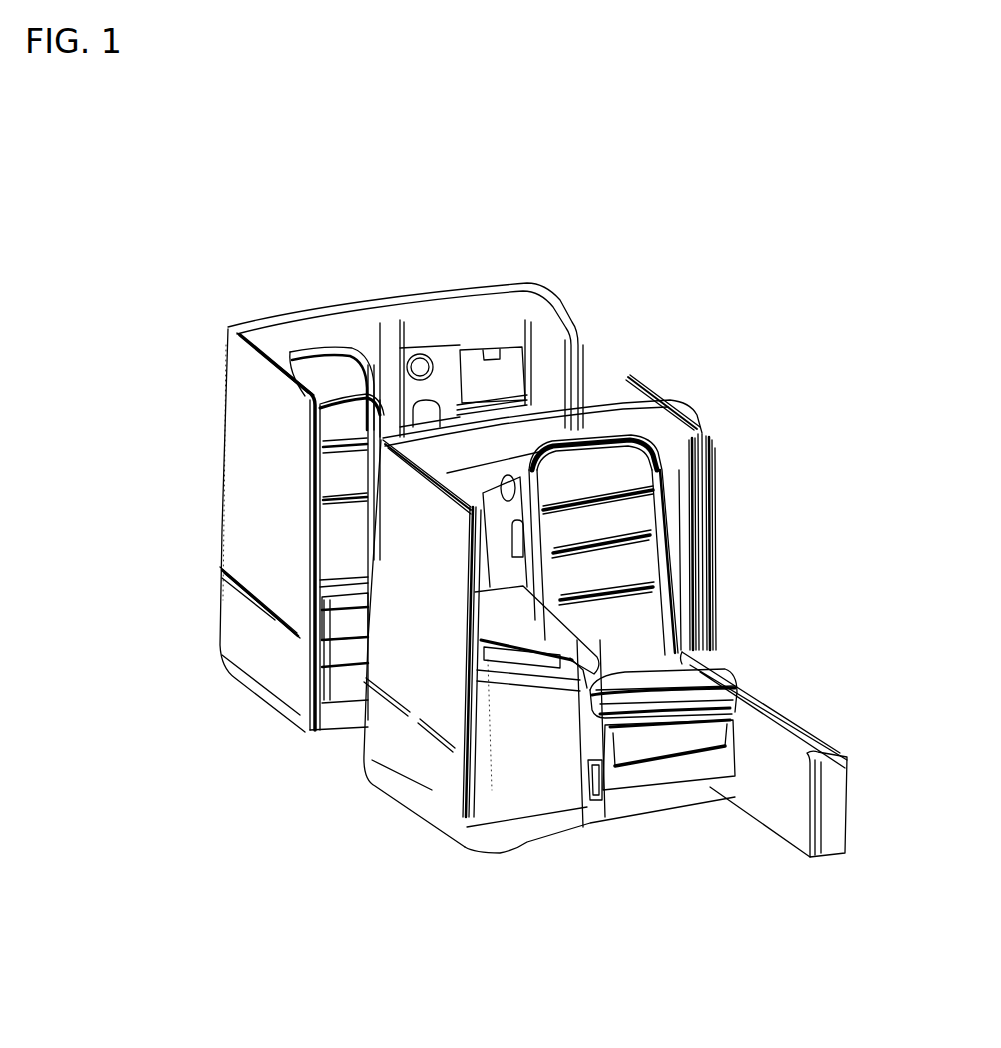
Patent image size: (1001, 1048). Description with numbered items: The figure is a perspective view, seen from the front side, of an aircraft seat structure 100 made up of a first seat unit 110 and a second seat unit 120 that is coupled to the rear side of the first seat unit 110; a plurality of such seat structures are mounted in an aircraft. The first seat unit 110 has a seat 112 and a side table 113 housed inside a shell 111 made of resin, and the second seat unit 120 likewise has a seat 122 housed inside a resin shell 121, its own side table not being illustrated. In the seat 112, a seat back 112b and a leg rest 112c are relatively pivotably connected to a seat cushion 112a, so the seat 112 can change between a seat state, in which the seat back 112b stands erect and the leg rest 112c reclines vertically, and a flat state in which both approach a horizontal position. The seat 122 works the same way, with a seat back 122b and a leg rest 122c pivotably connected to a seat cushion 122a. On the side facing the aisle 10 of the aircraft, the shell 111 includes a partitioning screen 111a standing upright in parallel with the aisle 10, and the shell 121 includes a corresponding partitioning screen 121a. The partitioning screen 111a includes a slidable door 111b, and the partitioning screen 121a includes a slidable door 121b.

The aisle 10 is at (306, 805).
The seat structure 100 is at (545, 283).
The first seat unit 110 is at (720, 503).
The shell 111 is at (572, 427).
The partitioning screen 111a is at (432, 765).
The door 111b is at (477, 717).
The seat 112 is at (660, 458).
The seat cushion 112a is at (693, 685).
The seat back 112b is at (625, 565).
The leg rest 112c is at (702, 747).
The side table 113 is at (513, 620).
The second seat unit 120 is at (400, 297).
The shell 121 is at (313, 324).
The partitioning screen 121a is at (262, 470).
The door 121b is at (305, 650).
The seat 122 is at (279, 349).
The seat cushion 122a is at (347, 602).
The seat back 122b is at (337, 431).
The leg rest 122c is at (347, 667).